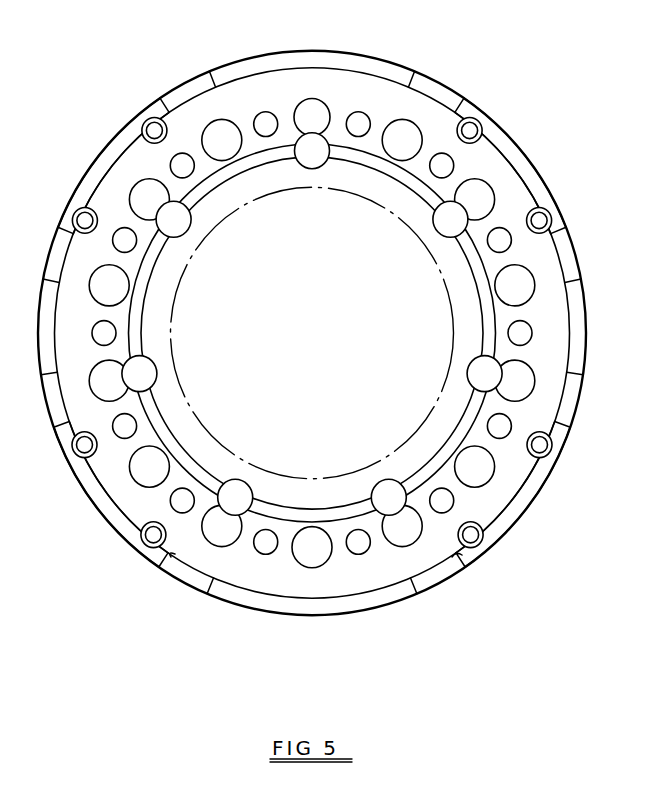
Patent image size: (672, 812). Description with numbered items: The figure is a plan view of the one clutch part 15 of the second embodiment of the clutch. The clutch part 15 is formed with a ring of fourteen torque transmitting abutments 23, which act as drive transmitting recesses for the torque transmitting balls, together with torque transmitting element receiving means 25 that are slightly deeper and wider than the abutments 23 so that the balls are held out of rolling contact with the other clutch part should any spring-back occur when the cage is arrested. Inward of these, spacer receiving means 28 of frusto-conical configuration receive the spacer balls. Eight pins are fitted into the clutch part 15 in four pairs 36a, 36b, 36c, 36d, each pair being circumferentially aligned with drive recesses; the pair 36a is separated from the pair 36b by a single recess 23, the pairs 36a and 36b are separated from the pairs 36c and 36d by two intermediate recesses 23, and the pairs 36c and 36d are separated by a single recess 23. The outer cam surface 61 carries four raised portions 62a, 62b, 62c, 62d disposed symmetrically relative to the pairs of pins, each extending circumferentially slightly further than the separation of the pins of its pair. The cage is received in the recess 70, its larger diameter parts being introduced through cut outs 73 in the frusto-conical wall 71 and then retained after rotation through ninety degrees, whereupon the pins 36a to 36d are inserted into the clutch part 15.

The clutch part 15 is at (581, 393).
The torque transmitting abutments 23 is at (358, 123).
The torque transmitting element receiving means 25 is at (414, 134).
The spacer receiving means 28 is at (440, 231).
The pins 36a is at (532, 213).
The pins 36b is at (478, 530).
The pins 36c is at (145, 529).
The pins 36d is at (92, 213).
The cam surface 61 is at (400, 74).
The raised portion 62a is at (548, 191).
The raised portion 62b is at (527, 508).
The raised portion 62c is at (108, 518).
The raised portion 62d is at (91, 171).
The recess 70 is at (262, 96).
The frusto-conical wall 71 is at (248, 70).
The cut outs 73 is at (171, 558).